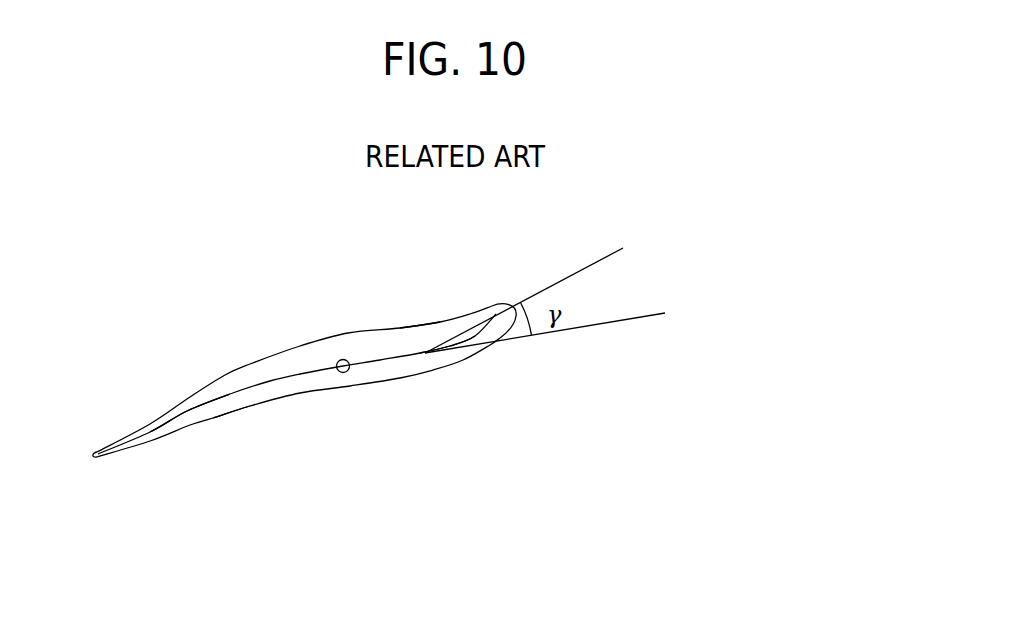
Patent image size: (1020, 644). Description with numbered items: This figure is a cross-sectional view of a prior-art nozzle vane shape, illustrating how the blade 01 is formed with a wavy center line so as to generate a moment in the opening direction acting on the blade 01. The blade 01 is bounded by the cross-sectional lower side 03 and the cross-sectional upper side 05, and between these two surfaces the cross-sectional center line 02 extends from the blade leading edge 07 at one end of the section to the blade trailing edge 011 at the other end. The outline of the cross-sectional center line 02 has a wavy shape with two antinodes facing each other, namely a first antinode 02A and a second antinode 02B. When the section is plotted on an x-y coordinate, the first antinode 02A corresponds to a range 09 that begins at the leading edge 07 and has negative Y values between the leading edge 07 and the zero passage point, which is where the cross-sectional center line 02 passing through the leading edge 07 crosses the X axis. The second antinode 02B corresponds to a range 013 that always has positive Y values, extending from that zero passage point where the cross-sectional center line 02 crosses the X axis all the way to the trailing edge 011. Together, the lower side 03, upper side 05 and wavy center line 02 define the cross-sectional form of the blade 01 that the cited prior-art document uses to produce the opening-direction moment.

The blade 01 is at (305, 396).
The cross-sectional center line 02 is at (282, 373).
The first antinode 02A is at (460, 341).
The second antinode 02B is at (187, 411).
The cross-sectional lower side 03 is at (213, 418).
The cross-sectional upper side 05 is at (223, 375).
The blade leading edge 07 is at (518, 312).
The range 09 is at (420, 337).
The blade trailing edge 011 is at (95, 459).
The range 013 is at (237, 405).